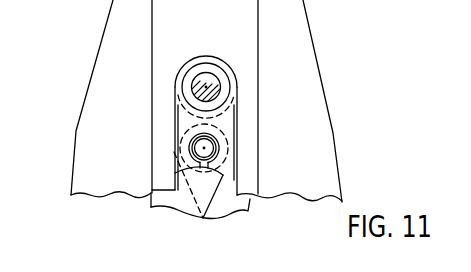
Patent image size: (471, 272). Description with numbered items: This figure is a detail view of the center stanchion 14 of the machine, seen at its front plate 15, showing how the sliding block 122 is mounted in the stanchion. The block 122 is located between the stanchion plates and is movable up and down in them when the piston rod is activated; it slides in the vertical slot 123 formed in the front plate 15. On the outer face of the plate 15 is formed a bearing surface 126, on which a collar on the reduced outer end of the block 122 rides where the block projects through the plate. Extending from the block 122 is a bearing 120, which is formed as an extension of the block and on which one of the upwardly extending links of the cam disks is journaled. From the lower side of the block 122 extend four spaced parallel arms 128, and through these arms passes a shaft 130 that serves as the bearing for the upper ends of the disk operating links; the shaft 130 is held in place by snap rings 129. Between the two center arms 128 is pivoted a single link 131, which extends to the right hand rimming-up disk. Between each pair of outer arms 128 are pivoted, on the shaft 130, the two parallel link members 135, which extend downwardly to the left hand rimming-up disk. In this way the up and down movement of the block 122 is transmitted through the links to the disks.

The center stanchion 14 is at (324, 77).
The front plate 15 is at (318, 113).
The bearing 120 is at (211, 78).
The sliding block 122 is at (240, 112).
The vertical slot 123 is at (232, 183).
The bearing surface 126 is at (173, 158).
The spaced parallel arm 128 is at (228, 122).
The snap ring 129 is at (185, 142).
The shaft 130 is at (211, 148).
The single link 131 is at (248, 200).
The parallel link member 135 is at (175, 192).